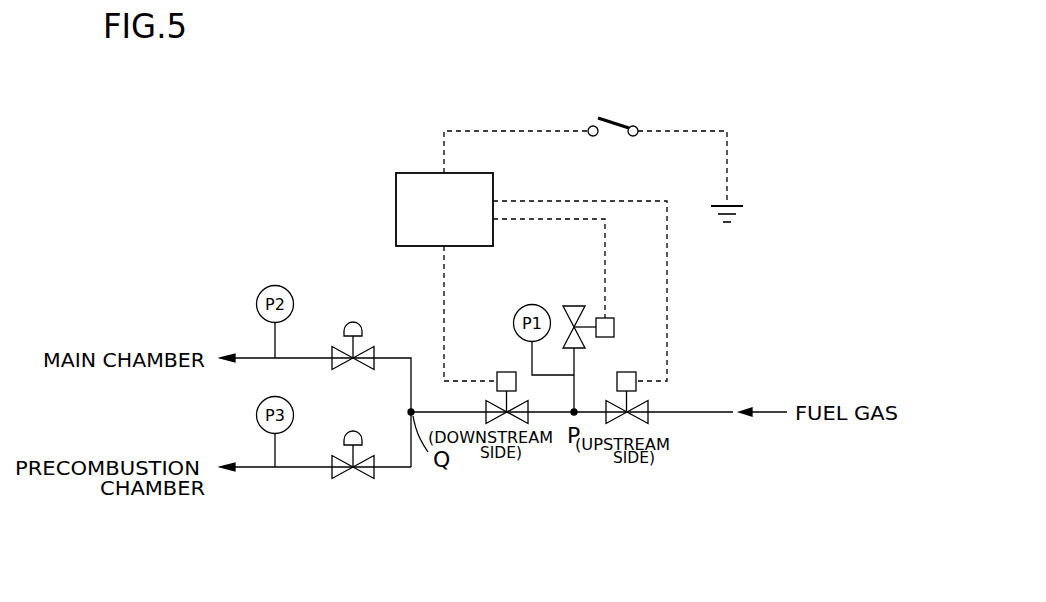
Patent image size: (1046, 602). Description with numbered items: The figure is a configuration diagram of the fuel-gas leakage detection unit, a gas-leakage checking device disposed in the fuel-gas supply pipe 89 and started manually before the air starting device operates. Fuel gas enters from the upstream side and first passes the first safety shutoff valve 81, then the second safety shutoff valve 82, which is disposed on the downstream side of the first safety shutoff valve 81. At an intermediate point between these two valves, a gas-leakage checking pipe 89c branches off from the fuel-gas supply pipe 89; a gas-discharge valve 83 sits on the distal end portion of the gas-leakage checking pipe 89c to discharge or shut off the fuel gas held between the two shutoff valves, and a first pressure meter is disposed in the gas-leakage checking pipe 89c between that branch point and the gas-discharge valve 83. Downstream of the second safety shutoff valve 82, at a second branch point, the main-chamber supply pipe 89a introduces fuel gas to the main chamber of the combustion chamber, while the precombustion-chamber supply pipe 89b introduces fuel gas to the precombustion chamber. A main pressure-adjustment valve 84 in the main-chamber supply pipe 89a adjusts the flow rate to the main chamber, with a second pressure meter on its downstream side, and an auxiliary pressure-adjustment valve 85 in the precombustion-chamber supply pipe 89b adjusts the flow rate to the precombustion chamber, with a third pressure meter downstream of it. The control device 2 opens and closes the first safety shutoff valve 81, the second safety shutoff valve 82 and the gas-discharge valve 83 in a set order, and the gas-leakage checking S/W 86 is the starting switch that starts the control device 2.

The control device 2 is at (396, 208).
The gas-leakage checking S/W 86 is at (633, 126).
The fuel-gas supply pipe 89 is at (692, 410).
The first safety shutoff valve 81 is at (649, 415).
The second safety shutoff valve 82 is at (528, 415).
The gas-discharge valve 83 is at (572, 305).
The gas-leakage checking pipe 89c is at (575, 384).
The main-chamber supply pipe 89a is at (302, 356).
The precombustion-chamber supply pipe 89b is at (302, 465).
The main pressure-adjustment valve 84 is at (374, 350).
The auxiliary pressure-adjustment valve 85 is at (375, 472).